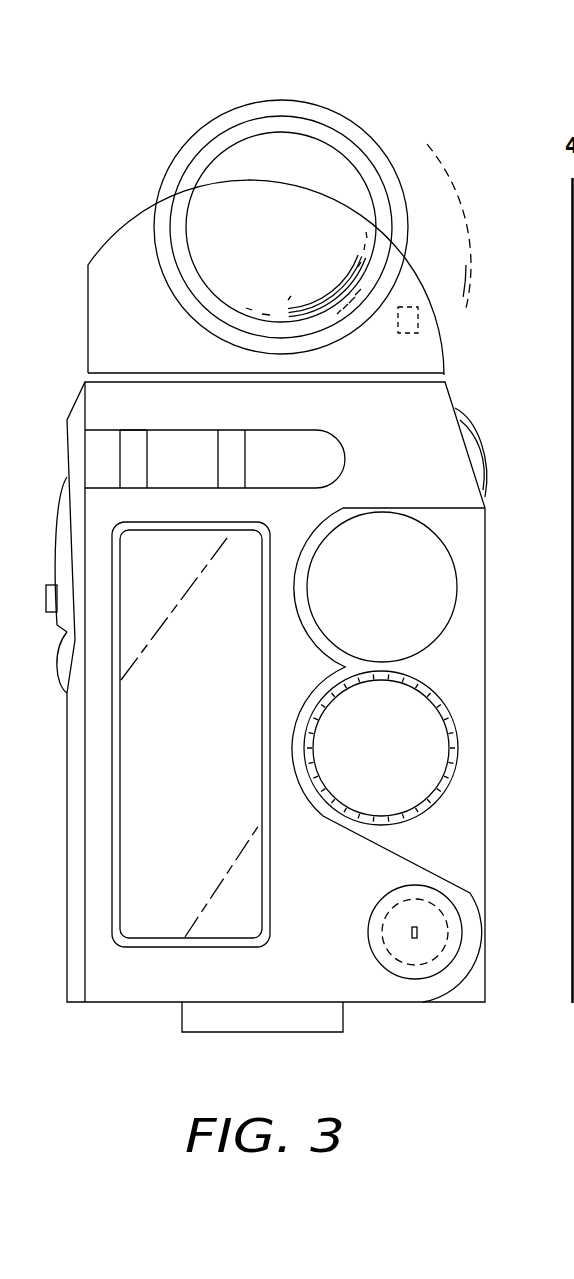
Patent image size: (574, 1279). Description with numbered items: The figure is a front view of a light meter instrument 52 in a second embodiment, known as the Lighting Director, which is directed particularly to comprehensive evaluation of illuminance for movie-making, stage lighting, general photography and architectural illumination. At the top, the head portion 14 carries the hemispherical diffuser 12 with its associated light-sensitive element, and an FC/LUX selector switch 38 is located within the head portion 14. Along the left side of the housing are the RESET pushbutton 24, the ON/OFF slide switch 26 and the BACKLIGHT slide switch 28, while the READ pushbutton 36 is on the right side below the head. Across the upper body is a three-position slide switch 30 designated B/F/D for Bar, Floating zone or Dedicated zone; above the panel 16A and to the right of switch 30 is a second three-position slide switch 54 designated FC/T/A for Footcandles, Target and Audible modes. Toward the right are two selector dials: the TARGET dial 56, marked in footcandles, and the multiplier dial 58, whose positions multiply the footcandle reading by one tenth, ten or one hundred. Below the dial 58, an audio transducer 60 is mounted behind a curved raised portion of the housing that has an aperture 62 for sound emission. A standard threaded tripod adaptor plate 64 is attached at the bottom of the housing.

The light meter instrument 52 is at (194, 58).
The hemispherical diffuser 12 is at (283, 148).
The head portion 14 is at (147, 148).
The FC/LUX selector switch 38 is at (418, 320).
The READ pushbutton 36 is at (487, 455).
The three-position slide switch 30 is at (118, 457).
The three-position slide switch 54 is at (173, 452).
The RESET pushbutton 24 is at (55, 516).
The ON/OFF slide switch 26 is at (46, 598).
The BACKLIGHT slide switch 28 is at (55, 656).
The panel 16A is at (137, 778).
The TARGET dial 56 is at (446, 597).
The dial 58 is at (430, 714).
The audio transducer 60 is at (400, 965).
The aperture 62 is at (418, 933).
The threaded tripod adaptor plate 64 is at (270, 1036).